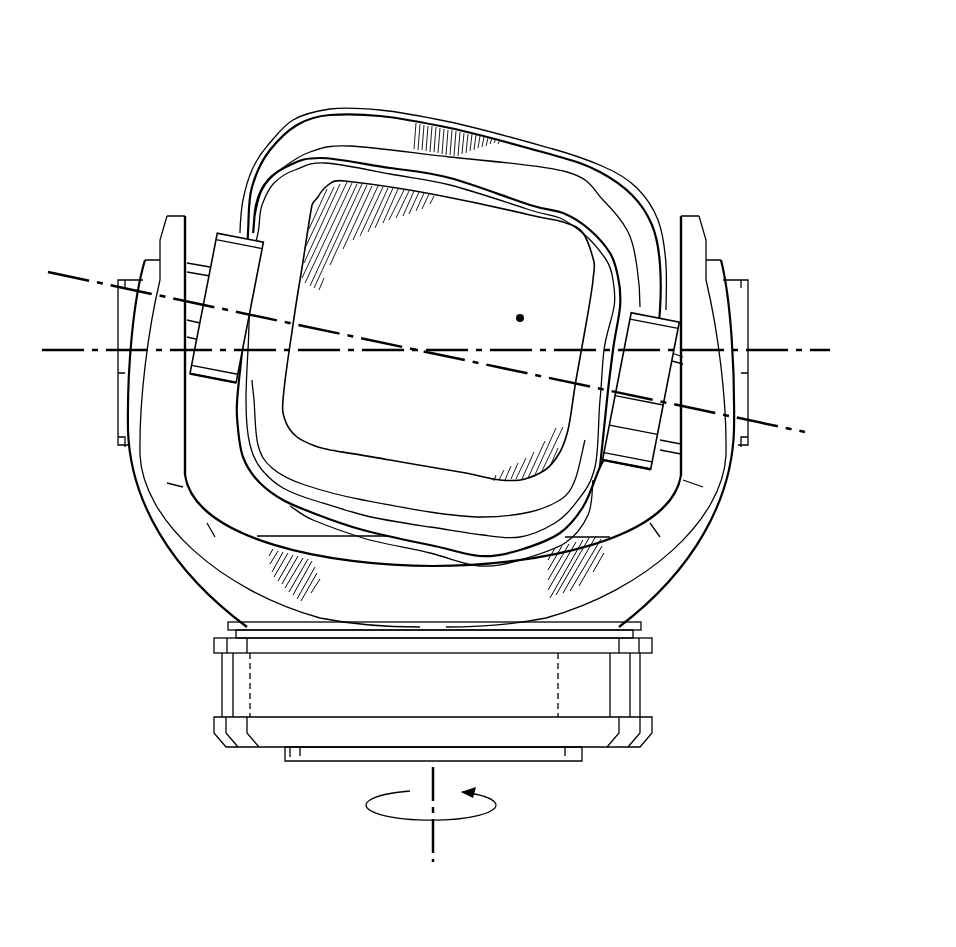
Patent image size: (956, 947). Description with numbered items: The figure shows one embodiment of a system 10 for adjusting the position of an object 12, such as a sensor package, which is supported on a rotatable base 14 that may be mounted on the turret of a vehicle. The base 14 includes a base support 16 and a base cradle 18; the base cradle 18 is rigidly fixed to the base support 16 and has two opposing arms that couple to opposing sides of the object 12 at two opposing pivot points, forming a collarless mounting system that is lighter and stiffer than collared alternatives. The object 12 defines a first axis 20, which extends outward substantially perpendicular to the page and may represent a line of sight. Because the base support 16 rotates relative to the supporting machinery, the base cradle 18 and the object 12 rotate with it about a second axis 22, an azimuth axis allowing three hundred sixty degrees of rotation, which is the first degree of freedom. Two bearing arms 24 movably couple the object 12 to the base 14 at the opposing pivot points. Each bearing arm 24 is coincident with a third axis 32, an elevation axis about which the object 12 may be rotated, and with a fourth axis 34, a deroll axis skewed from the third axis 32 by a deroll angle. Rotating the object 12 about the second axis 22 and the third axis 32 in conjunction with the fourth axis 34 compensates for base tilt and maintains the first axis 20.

The system 10 is at (620, 73).
The object 12 is at (444, 414).
The rotatable base 14 is at (684, 617).
The base support 16 is at (646, 684).
The base cradle 18 is at (698, 556).
The first axis 20 is at (520, 312).
The second axis 22 is at (433, 838).
The bearing arms 24 is at (232, 232).
The third axis 32 is at (808, 434).
The fourth axis 34 is at (812, 346).